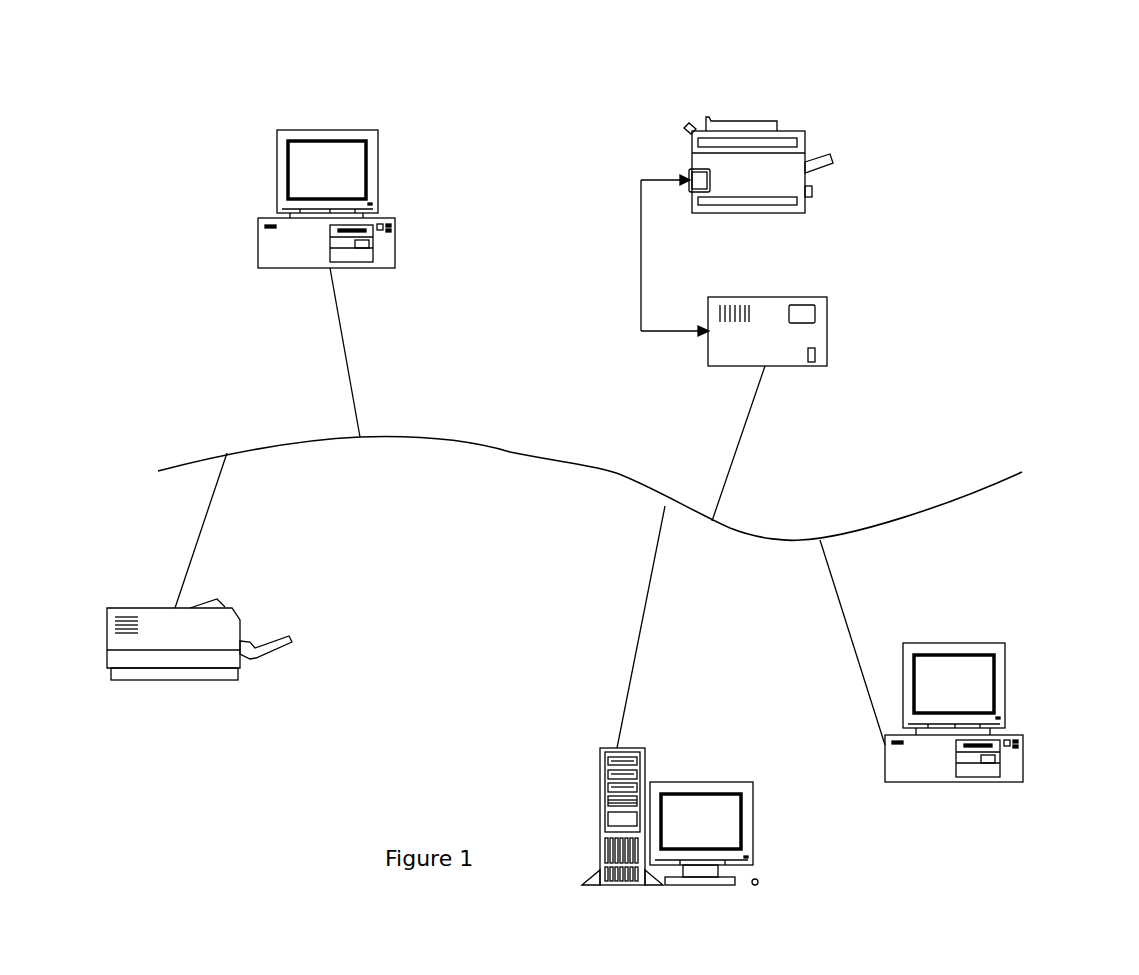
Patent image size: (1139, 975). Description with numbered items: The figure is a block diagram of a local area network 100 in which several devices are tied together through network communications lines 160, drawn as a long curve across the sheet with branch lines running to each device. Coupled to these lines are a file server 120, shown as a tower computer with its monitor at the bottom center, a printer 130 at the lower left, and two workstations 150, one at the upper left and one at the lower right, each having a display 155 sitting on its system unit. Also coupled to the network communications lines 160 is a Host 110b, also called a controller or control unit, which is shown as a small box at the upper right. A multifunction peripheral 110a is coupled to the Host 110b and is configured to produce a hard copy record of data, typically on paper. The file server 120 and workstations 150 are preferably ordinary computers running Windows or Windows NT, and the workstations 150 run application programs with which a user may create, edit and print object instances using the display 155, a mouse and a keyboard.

The local area network 100 is at (187, 389).
The multifunction peripheral 110a is at (758, 117).
The Host 110b is at (765, 297).
The file server 120 is at (701, 782).
The printer 130 is at (175, 680).
The workstations 150 is at (258, 232).
The display 155 is at (328, 130).
The network communications lines 160 is at (530, 458).